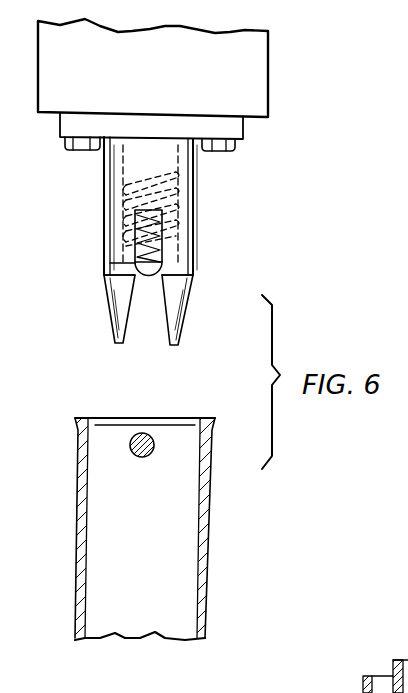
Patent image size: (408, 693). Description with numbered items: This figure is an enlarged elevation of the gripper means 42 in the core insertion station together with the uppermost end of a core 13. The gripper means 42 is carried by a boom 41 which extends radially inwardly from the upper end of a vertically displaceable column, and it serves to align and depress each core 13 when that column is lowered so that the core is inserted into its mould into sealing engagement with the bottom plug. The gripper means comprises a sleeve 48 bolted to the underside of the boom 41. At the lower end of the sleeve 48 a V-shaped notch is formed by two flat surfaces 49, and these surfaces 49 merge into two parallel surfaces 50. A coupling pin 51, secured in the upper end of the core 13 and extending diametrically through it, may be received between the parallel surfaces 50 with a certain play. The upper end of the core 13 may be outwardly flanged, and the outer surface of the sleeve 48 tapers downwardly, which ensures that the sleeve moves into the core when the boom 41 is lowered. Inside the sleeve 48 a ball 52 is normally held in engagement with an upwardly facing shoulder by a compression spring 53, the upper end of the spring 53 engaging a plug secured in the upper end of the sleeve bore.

The boom 41 is at (257, 70).
The gripper means 42 is at (205, 202).
The sleeve 48 is at (187, 237).
The compression spring 53 is at (135, 212).
The parallel surfaces 50 is at (140, 260).
The ball 52 is at (167, 301).
The flat surfaces 49 is at (122, 330).
The core 13 is at (200, 550).
The coupling pin 51 is at (147, 457).